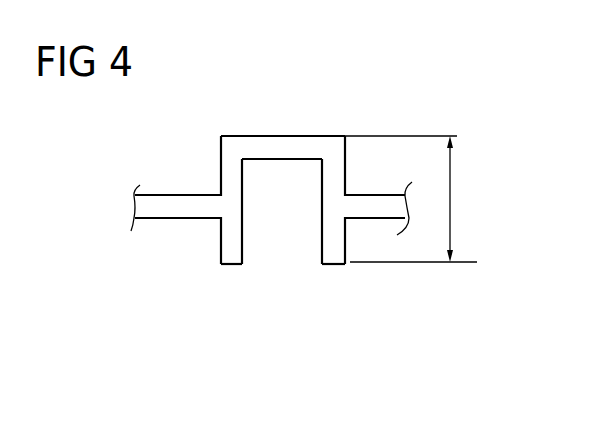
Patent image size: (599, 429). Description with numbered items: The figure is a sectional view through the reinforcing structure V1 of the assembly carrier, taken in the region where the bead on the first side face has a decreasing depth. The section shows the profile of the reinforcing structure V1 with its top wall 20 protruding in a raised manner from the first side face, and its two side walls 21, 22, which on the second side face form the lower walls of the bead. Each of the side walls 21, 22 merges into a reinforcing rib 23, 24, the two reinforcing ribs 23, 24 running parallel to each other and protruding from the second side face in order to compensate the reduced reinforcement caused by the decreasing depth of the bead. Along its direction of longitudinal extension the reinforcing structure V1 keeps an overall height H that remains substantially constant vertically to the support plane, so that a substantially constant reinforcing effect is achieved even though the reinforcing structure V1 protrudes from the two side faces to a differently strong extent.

The top wall of U-shaped profile 20 is at (282, 135).
The side wall 21 is at (333, 175).
The side wall 22 is at (232, 175).
The reinforcing rib 23 is at (232, 248).
The reinforcing rib 24 is at (333, 253).
The reinforcing structure V1 is at (287, 279).
The overall height H is at (411, 199).